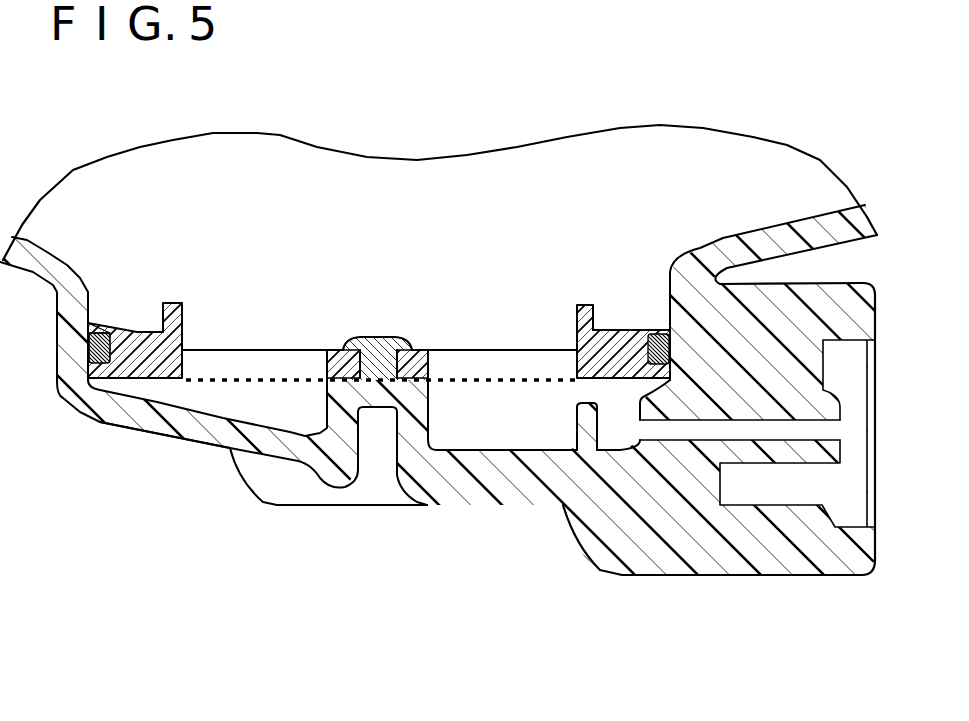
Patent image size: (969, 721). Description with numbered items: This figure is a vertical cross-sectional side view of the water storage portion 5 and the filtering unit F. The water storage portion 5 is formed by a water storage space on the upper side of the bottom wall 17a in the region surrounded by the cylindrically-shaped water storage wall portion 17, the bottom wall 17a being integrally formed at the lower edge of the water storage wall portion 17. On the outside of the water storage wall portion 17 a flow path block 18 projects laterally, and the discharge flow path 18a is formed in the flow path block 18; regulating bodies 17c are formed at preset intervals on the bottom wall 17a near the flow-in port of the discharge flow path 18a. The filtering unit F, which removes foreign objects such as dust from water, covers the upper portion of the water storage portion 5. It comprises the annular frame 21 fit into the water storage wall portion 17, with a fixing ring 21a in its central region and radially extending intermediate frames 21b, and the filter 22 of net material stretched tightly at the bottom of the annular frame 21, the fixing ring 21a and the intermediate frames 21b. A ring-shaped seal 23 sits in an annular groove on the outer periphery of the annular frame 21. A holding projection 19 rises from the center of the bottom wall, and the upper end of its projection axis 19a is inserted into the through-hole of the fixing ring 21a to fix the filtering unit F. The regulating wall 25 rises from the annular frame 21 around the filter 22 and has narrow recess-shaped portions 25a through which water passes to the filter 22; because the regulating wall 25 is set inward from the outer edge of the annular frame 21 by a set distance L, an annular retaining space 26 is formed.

The water storage portion 5 is at (470, 410).
The water storage wall portion 17 is at (678, 256).
The bottom wall 17a is at (148, 435).
The regulating bodies 17c is at (582, 410).
The flow path block 18 is at (752, 577).
The discharge flow path 18a is at (718, 432).
The holding projection 19 is at (325, 392).
The projection axis 19a is at (383, 340).
The annular frame 21 is at (630, 330).
The fixing ring 21a is at (336, 349).
The intermediate frames 21b is at (233, 348).
The filter 22 is at (227, 381).
The ring-shaped seal 23 is at (88, 342).
The regulating wall 25 is at (585, 303).
The recess-shaped portions 25a is at (173, 302).
The annular retaining space 26 is at (141, 319).
The filtering unit F is at (278, 347).
The set distance L is at (163, 245).